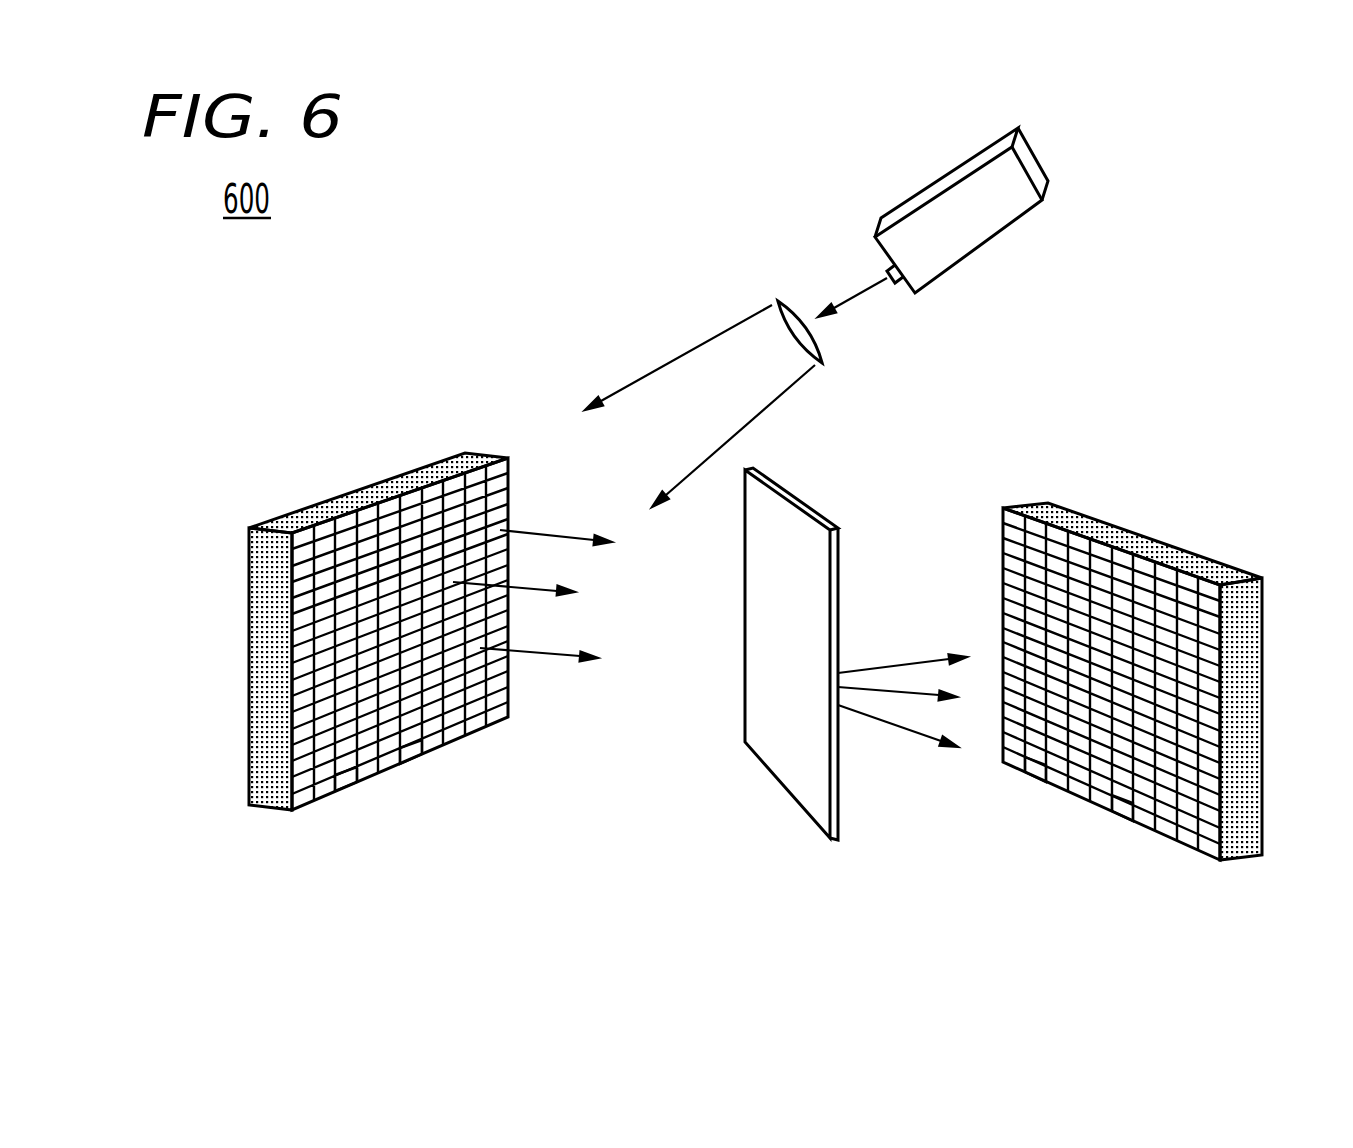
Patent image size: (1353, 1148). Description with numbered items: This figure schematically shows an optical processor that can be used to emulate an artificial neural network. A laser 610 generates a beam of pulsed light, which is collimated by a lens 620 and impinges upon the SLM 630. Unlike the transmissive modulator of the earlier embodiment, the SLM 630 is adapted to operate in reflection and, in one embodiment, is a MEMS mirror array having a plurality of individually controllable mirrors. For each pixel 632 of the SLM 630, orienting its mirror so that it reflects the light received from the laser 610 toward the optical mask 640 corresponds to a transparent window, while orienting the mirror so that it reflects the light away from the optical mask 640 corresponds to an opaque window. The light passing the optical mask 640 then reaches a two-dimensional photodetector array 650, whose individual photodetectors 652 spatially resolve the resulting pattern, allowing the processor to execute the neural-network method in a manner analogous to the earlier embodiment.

The laser 610 is at (960, 168).
The lens 620 is at (775, 298).
The SLM 630 is at (262, 800).
The pixel 632 is at (347, 775).
The optical mask 640 is at (797, 493).
The photodetector array 650 is at (1158, 542).
The photodetector 652 is at (1040, 773).